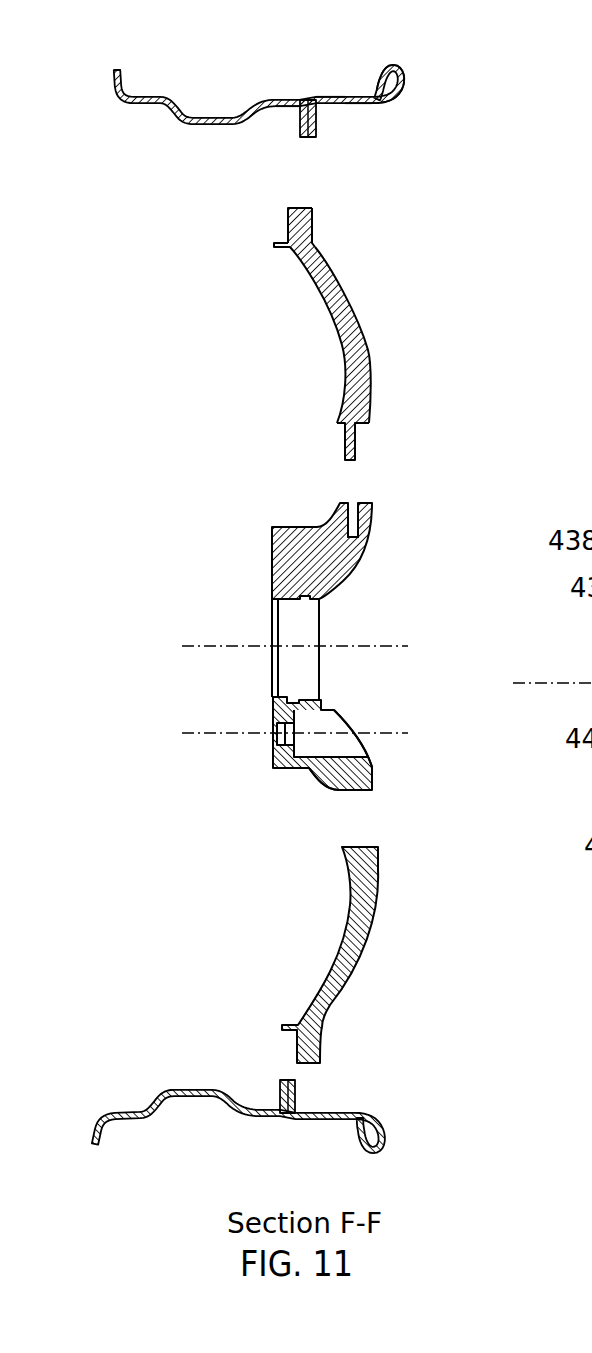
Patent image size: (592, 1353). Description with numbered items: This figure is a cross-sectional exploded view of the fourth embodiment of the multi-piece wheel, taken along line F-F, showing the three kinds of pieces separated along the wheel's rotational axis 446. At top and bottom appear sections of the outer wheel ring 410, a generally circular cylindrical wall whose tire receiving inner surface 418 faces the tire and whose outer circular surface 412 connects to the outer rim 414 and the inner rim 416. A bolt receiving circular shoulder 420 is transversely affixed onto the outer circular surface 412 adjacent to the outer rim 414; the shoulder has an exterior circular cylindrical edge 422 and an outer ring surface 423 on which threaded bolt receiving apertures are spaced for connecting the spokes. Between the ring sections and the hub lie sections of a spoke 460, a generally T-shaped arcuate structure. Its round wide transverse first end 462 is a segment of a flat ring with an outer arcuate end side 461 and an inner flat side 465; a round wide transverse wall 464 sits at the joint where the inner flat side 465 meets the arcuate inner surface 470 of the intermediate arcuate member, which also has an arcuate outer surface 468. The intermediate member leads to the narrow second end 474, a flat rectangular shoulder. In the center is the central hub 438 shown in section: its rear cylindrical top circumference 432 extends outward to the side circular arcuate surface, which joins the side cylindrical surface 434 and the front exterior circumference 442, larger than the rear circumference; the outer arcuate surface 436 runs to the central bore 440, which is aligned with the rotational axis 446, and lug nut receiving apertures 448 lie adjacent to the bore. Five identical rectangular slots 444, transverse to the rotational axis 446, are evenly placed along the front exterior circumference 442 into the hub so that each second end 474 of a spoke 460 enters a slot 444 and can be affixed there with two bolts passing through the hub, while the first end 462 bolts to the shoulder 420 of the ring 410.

The outer wheel ring 410 is at (248, 578).
The outer circular surface 412 is at (356, 105).
The outer rim 414 is at (402, 68).
The inner rim 416 is at (113, 73).
The tire receiving inner surface 418 is at (330, 96).
The bolt receiving circular shoulder 420 is at (282, 125).
The exterior circular cylindrical edge 422 is at (305, 138).
The outer ring surface 423 is at (318, 117).
The rear cylindrical top circumference 432 is at (270, 527).
The side cylindrical surface 434 is at (362, 792).
The outer arcuate surface 436 is at (346, 565).
The side circular arcuate surface 438 is at (335, 672).
The central bore 440 is at (283, 662).
The front exterior circumference 442 is at (366, 792).
The rectangular slot 444 is at (352, 514).
The rotational axis 446 is at (326, 685).
The lug nut receiving aperture 448 is at (345, 748).
The spoke 460 is at (351, 625).
The outer arcuate end side 461 is at (300, 208).
The round wide transverse first end 462 is at (329, 218).
The round wide transverse wall 464 is at (274, 245).
The inner flat side 465 is at (288, 225).
The arcuate outer surface 468 is at (351, 307).
The arcuate inner surface 470 is at (335, 317).
The second end 474 is at (356, 440).